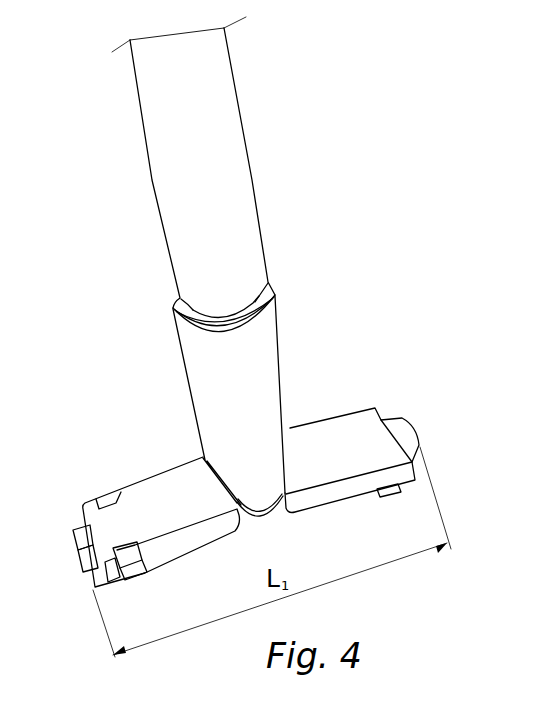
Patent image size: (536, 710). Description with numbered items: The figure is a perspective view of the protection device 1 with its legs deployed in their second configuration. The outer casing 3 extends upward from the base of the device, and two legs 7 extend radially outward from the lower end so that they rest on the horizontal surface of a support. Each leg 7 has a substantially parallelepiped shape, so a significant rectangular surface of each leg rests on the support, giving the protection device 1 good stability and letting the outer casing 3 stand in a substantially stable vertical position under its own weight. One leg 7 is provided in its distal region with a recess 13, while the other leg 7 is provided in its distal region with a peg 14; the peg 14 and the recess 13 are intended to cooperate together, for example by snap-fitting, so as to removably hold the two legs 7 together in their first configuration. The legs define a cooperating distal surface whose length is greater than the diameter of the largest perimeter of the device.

The protection device 1 is at (169, 372).
The outer casing 3 is at (312, 306).
The leg 7 is at (88, 505).
The recess 13 is at (130, 584).
The peg 14 is at (387, 497).